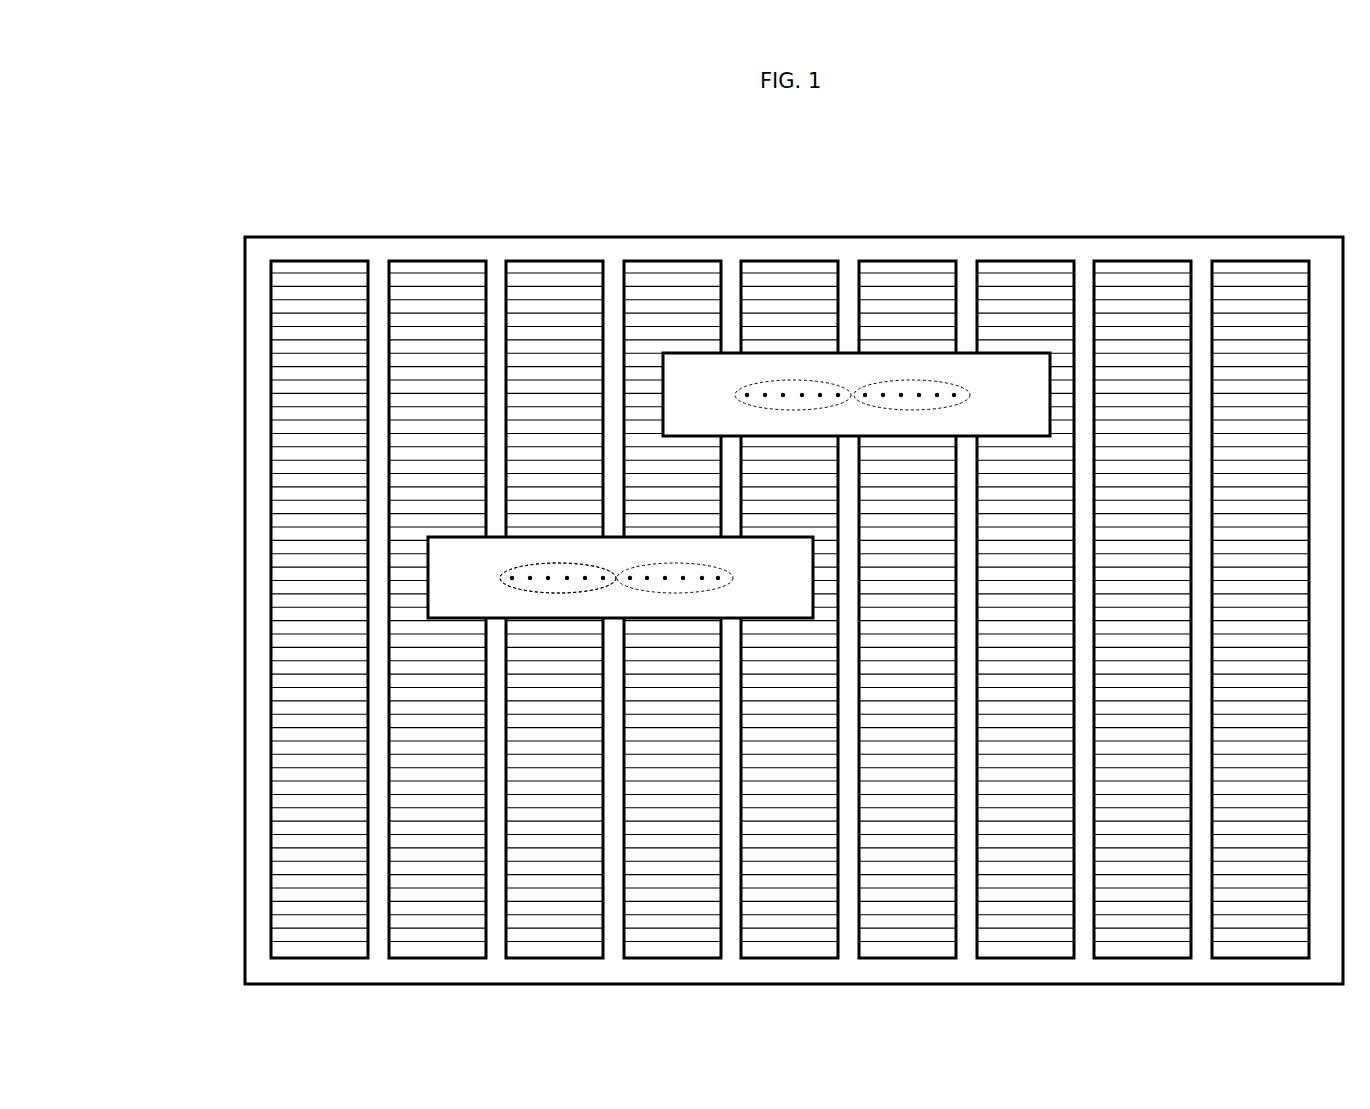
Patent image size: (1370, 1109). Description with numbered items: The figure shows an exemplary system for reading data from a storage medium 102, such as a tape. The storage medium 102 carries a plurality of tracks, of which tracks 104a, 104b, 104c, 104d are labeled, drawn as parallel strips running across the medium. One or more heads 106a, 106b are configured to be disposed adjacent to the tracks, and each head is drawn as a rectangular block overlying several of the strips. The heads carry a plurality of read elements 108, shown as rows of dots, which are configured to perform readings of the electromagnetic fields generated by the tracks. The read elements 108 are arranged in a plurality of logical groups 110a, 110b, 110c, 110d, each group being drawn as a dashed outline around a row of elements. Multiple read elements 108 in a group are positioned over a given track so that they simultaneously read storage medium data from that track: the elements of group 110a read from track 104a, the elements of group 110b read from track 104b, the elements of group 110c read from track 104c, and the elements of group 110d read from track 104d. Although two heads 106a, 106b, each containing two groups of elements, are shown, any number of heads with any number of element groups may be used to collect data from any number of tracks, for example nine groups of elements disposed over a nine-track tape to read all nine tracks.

The storage medium 102 is at (338, 237).
The track 104a is at (540, 259).
The track 104b is at (668, 260).
The track 104c is at (780, 260).
The track 104d is at (890, 260).
The head 106a is at (425, 555).
The head 106b is at (970, 353).
The read elements 108 is at (548, 566).
The logical group 110a is at (512, 578).
The logical group 110b is at (643, 592).
The logical group 110c is at (850, 392).
The logical group 110d is at (967, 390).